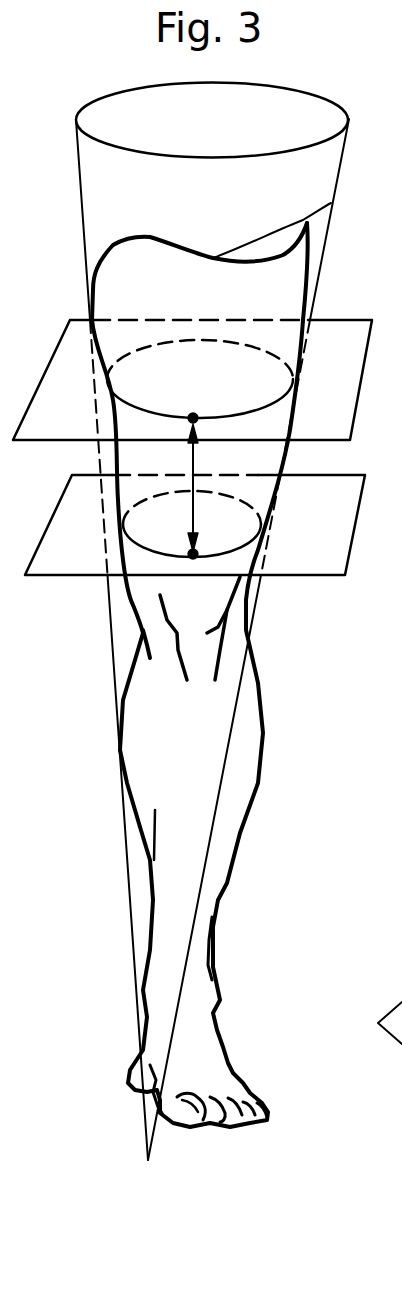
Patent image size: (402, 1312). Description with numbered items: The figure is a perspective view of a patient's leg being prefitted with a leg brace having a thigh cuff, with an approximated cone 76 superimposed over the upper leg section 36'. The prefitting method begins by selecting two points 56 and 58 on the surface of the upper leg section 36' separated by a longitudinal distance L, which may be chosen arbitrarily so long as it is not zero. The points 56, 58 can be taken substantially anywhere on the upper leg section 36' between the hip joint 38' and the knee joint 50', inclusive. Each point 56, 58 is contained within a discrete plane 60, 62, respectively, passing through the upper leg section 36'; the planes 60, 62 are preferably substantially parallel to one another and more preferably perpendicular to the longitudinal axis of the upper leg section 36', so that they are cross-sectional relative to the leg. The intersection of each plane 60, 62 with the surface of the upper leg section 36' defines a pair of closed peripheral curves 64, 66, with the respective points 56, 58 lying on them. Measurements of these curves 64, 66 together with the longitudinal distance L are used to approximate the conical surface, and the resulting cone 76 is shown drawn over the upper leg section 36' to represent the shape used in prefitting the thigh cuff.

The upper leg section 36' is at (231, 428).
The hip joint 38' is at (296, 224).
The knee joint 50' is at (229, 628).
The point 56 is at (193, 414).
The point 58 is at (191, 554).
The plane 60 is at (340, 417).
The plane 62 is at (333, 547).
The closed peripheral curve 64 is at (213, 415).
The closed peripheral curve 66 is at (212, 527).
The cone 76 is at (128, 922).
The longitudinal distance L is at (195, 462).